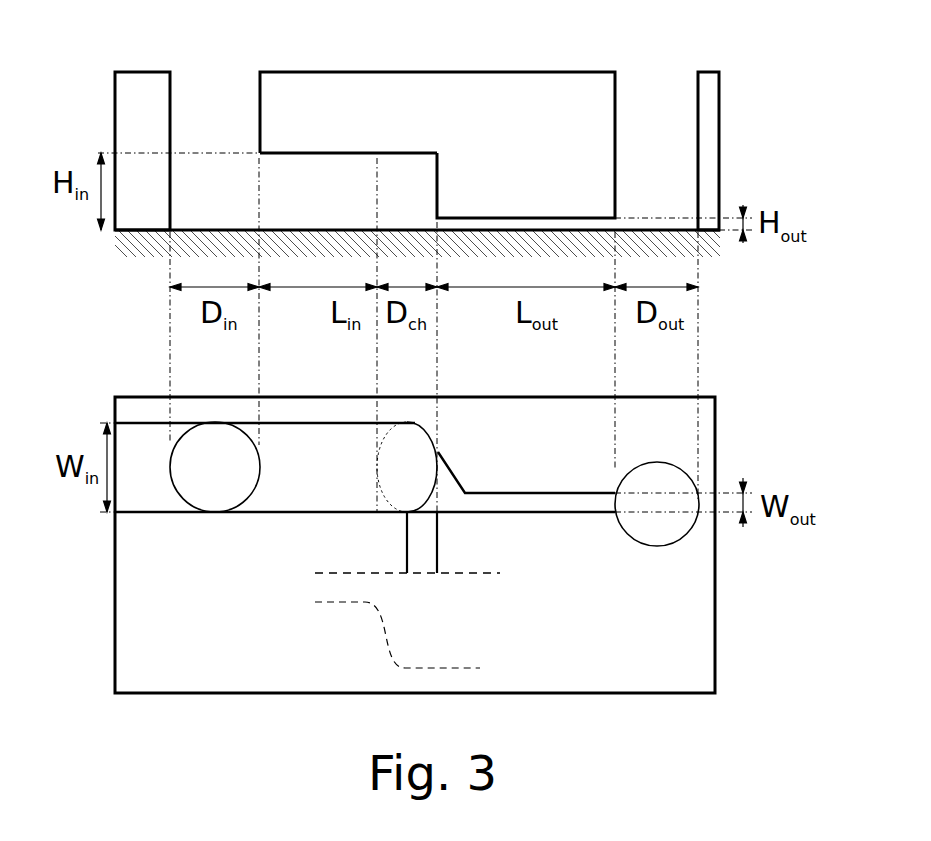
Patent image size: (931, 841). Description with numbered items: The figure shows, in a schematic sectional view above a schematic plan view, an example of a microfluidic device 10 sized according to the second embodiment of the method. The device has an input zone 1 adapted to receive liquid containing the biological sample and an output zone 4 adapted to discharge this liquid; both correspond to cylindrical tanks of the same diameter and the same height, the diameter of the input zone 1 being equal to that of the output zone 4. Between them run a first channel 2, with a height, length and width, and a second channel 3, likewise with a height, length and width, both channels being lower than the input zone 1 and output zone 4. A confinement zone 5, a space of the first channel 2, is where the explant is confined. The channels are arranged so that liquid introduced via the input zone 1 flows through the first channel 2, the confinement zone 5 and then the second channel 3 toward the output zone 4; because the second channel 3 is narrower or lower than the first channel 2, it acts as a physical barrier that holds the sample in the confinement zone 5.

The input zone 1 is at (205, 133).
The first channel 2 is at (333, 197).
The second channel 3 is at (480, 210).
The output zone 4 is at (650, 137).
The confinement zone 5 is at (413, 180).
The microfluidic device 10 is at (90, 329).